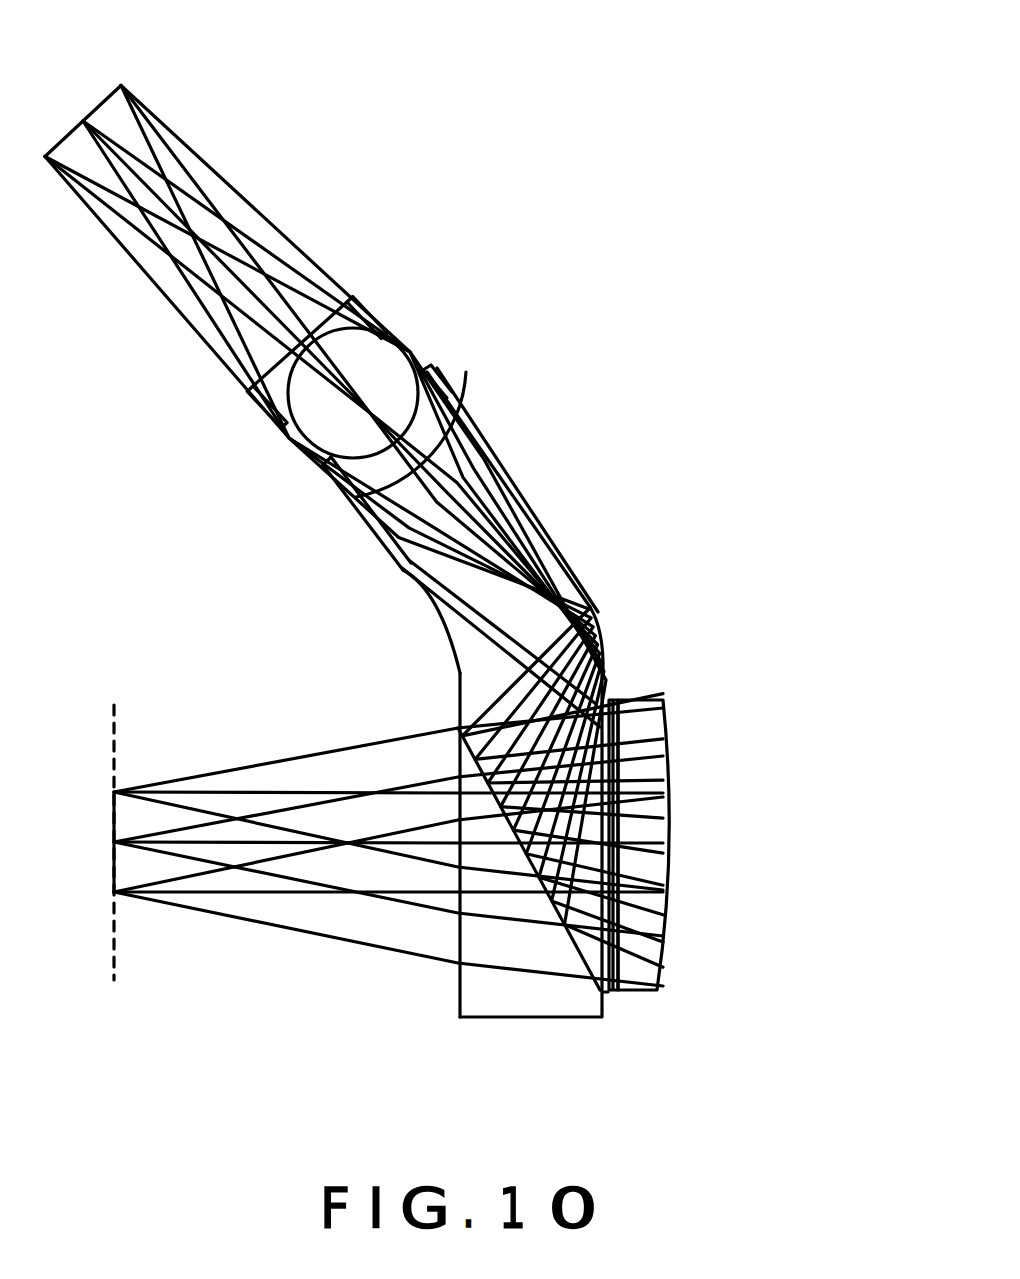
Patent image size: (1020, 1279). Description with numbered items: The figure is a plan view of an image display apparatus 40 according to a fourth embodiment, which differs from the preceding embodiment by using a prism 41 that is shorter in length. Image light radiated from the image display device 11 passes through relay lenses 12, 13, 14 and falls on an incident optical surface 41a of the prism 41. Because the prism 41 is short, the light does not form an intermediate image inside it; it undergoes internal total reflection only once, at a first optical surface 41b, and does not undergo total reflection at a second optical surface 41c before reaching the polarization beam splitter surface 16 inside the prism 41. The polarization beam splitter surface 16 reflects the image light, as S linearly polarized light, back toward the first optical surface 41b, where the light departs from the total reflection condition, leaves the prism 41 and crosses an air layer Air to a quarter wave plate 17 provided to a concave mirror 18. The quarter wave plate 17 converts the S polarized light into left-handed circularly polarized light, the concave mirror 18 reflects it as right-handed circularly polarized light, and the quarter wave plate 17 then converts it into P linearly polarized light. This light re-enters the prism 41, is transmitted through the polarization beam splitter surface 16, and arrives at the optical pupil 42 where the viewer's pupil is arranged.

The image display device 11 is at (70, 133).
The relay lens 12 is at (343, 303).
The relay lens 13 is at (375, 362).
The relay lens 14 is at (433, 403).
The polarization beam splitter surface 16 is at (550, 912).
The quarter wave plate 17 is at (620, 990).
The concave mirror 18 is at (655, 834).
The image display apparatus 40 is at (348, 188).
The prism 41 is at (712, 680).
The incident optical surface 41a is at (507, 467).
The first optical surface 41b is at (603, 612).
The second optical surface 41c is at (460, 680).
The optical pupil 42 is at (127, 712).
The air layer Air is at (603, 993).